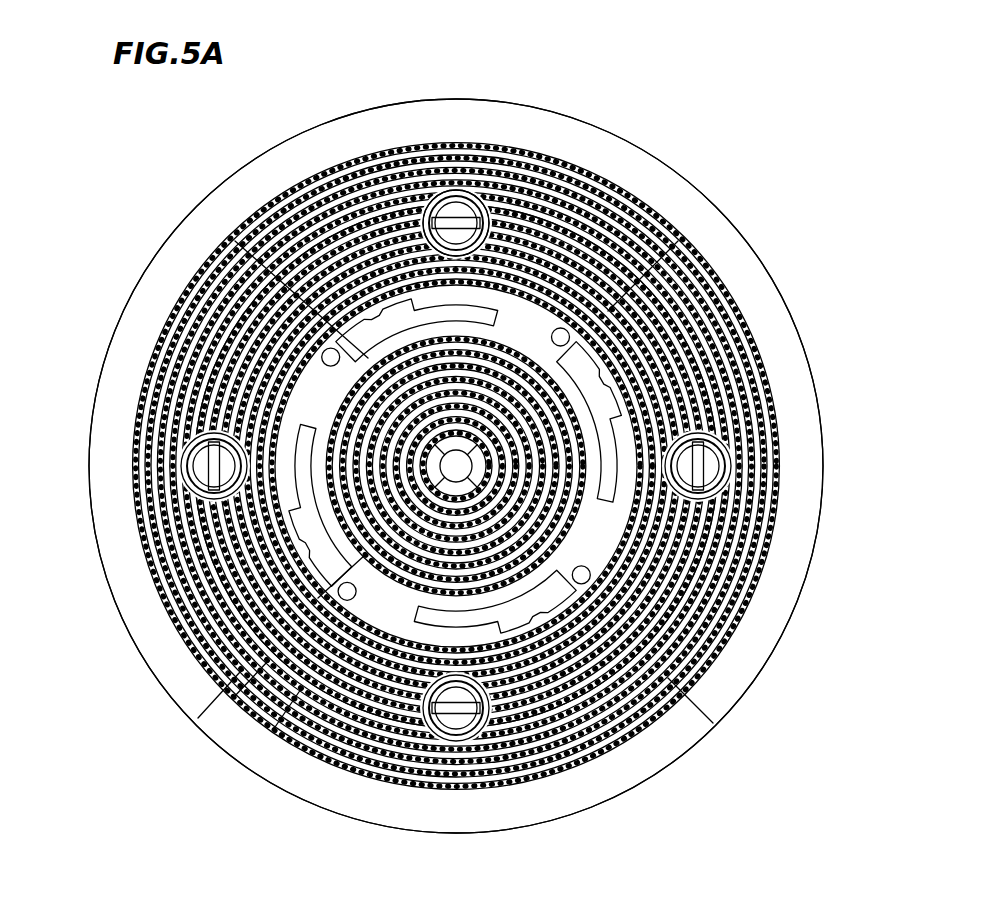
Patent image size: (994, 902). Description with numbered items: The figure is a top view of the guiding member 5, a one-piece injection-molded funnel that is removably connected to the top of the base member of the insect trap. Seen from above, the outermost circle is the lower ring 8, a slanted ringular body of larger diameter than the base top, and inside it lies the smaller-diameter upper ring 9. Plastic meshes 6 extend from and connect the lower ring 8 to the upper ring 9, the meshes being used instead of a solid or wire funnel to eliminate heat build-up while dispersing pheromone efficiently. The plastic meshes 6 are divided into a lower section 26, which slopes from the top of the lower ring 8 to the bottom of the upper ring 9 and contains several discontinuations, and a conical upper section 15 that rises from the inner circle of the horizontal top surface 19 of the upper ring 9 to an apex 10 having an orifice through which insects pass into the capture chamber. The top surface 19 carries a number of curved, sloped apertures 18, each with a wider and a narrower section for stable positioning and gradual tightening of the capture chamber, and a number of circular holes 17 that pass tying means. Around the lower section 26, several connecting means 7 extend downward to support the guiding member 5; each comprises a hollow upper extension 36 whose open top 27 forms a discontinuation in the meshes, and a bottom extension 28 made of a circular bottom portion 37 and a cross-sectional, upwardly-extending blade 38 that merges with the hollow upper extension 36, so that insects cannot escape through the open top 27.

The guiding member 5 is at (710, 767).
The plastic meshes 6 is at (265, 722).
The connecting means 7 is at (722, 462).
The lower ring 8 is at (728, 268).
The upper ring 9 is at (520, 315).
The apex 10 is at (445, 464).
The upper section 15 is at (366, 292).
The holes 17 is at (315, 346).
The apertures 18 is at (290, 542).
The top surface 19 is at (626, 280).
The lower section 26 is at (675, 610).
The open top 27 is at (709, 488).
The bottom extension 28 is at (470, 190).
The hollow upper extension 36 is at (418, 210).
The bottom portion 37 is at (458, 190).
The cross-sectional, upwardly-extending blade 38 is at (694, 456).